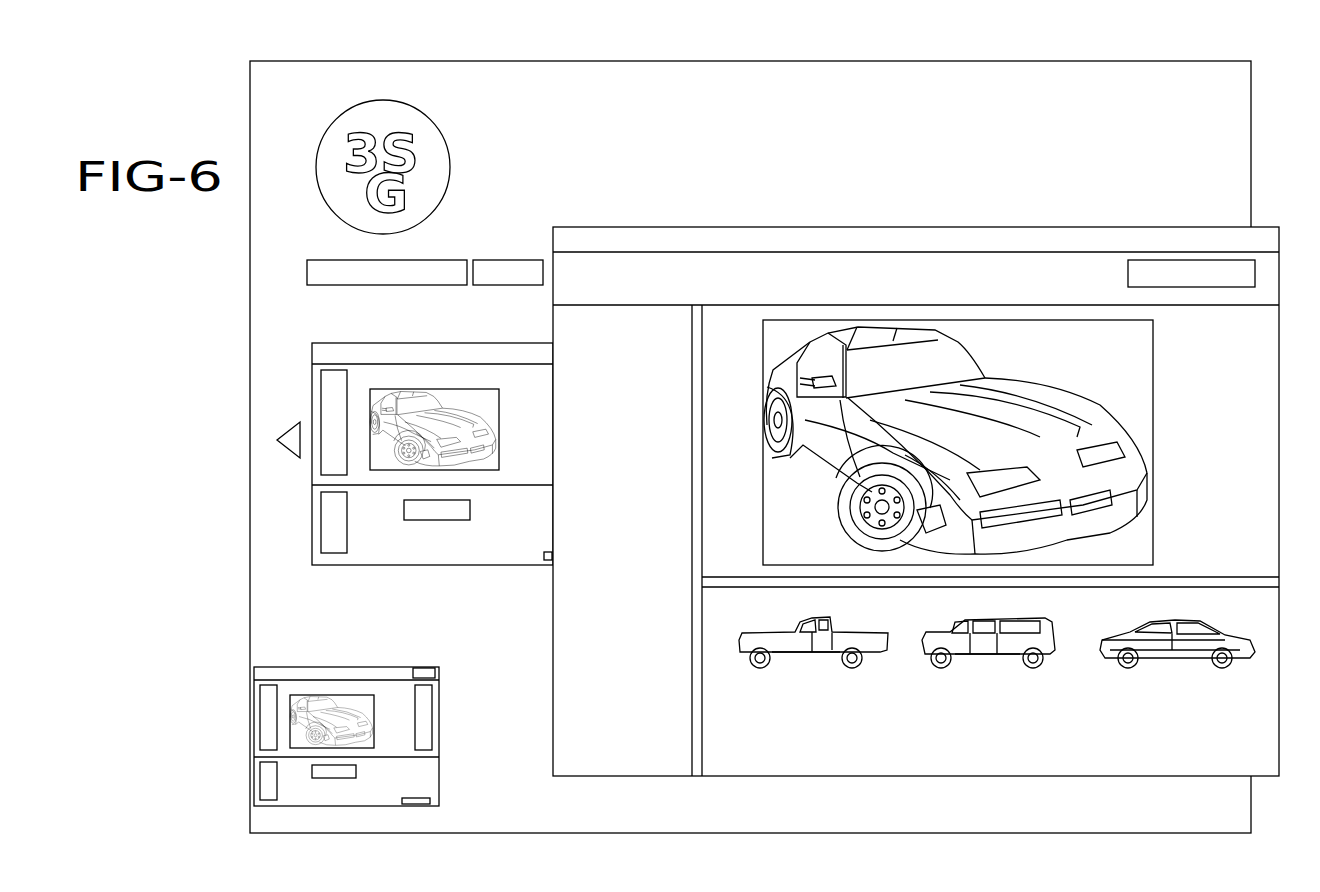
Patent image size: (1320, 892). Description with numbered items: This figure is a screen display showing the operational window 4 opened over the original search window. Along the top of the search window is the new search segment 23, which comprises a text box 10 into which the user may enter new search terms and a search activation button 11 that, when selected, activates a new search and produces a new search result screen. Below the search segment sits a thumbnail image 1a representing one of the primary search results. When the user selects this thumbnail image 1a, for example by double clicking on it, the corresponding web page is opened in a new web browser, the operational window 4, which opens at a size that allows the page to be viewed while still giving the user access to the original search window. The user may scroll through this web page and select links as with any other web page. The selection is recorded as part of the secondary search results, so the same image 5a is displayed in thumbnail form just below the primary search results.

The new search segment 23 is at (548, 57).
The text box 10 is at (307, 286).
The search activation button 11 is at (505, 265).
The operational window 4 is at (1280, 272).
The thumbnail image 1a is at (311, 533).
The image 5a is at (367, 806).